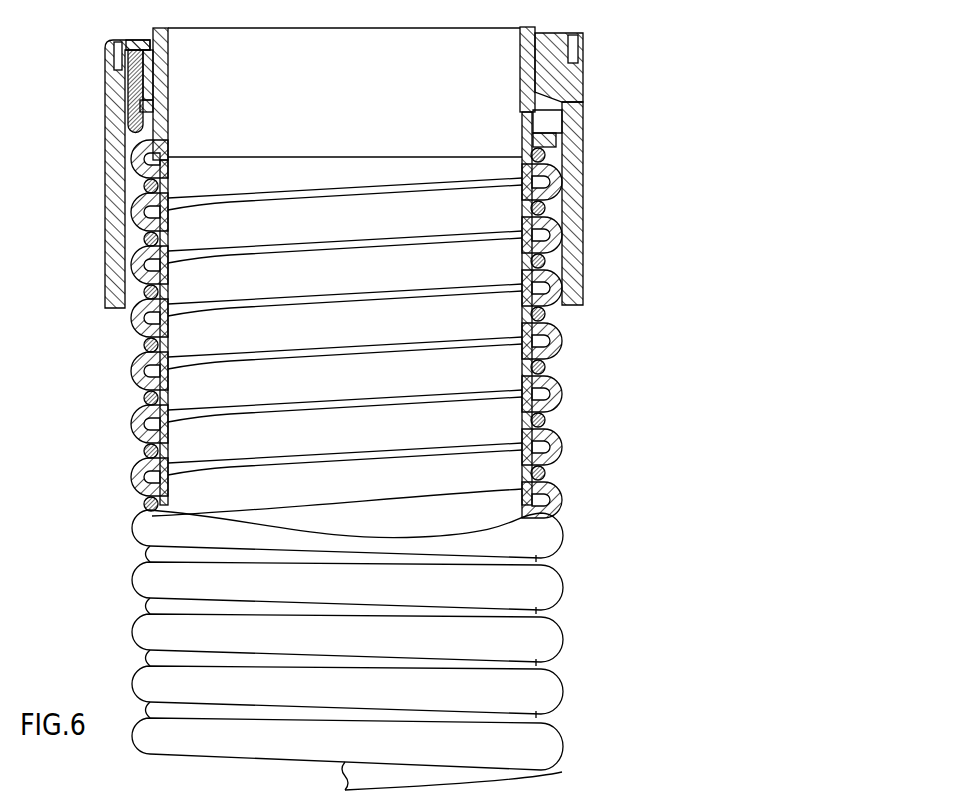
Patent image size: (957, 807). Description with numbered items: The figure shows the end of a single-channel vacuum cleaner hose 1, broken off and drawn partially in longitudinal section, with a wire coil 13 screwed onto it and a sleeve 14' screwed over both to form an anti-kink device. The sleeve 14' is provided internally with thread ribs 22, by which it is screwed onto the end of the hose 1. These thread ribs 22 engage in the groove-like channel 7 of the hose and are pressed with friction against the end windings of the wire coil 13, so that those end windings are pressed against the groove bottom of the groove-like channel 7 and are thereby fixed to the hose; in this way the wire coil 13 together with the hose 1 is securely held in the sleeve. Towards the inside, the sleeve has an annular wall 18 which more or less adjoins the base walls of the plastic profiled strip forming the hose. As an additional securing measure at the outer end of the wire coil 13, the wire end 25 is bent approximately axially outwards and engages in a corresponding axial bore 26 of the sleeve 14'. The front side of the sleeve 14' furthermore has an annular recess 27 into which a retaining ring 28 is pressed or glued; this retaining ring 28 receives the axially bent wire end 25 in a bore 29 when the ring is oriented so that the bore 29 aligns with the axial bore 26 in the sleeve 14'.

The hose 1 is at (172, 770).
The groove-like channel 7 is at (572, 365).
The wire coil 13 is at (545, 418).
The sleeve 14' is at (320, 174).
The annular wall 18 is at (170, 126).
The thread ribs 22 is at (555, 157).
The wire end 25 is at (120, 82).
The axial bore 26 is at (146, 103).
The annular recess 27 is at (577, 40).
The retaining ring 28 is at (563, 77).
The bore 29 is at (138, 45).